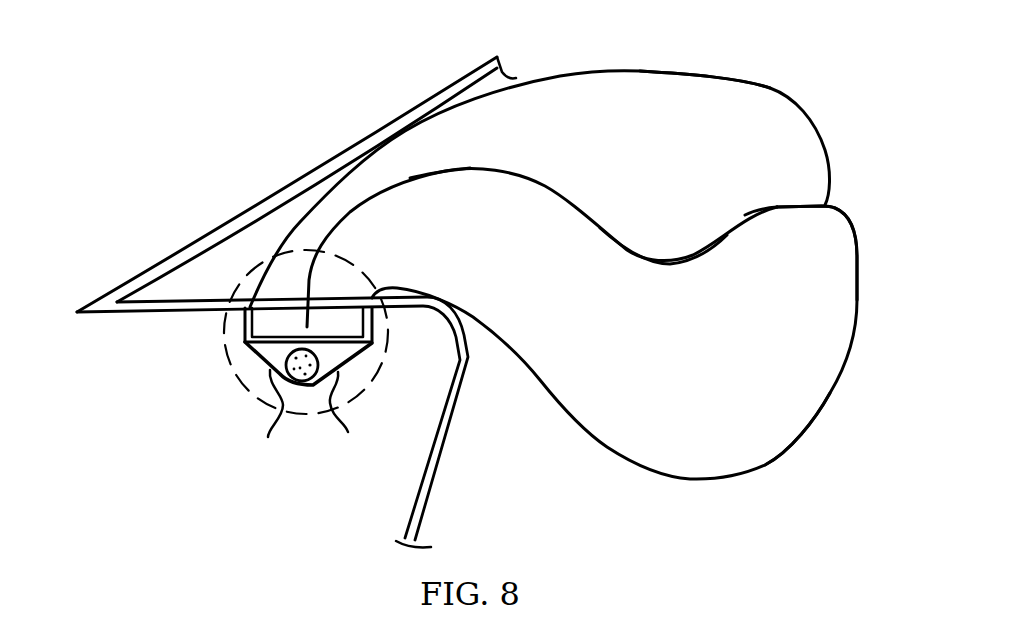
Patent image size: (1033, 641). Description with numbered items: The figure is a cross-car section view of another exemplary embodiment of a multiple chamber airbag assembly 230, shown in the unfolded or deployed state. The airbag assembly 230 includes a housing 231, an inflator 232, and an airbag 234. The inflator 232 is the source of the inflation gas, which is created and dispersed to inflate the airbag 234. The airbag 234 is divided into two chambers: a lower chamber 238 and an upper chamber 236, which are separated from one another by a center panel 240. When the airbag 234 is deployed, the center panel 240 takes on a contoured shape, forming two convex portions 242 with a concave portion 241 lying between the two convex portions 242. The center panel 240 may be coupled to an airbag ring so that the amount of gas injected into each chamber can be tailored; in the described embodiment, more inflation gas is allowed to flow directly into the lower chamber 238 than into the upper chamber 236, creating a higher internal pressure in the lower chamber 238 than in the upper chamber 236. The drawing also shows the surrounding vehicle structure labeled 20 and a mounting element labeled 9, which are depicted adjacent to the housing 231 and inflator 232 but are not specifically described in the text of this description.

The instrument panel 20 is at (226, 101).
The mounting bracket 9 is at (220, 342).
The multiple chamber airbag assembly 230 is at (200, 388).
The housing 231 is at (348, 432).
The inflator 232 is at (268, 437).
The airbag 234 is at (609, 486).
The upper chamber 236 is at (740, 93).
The lower chamber 238 is at (770, 450).
The center panel 240 is at (778, 205).
The concave portion 241 is at (663, 236).
The convex portions 242 is at (486, 184).